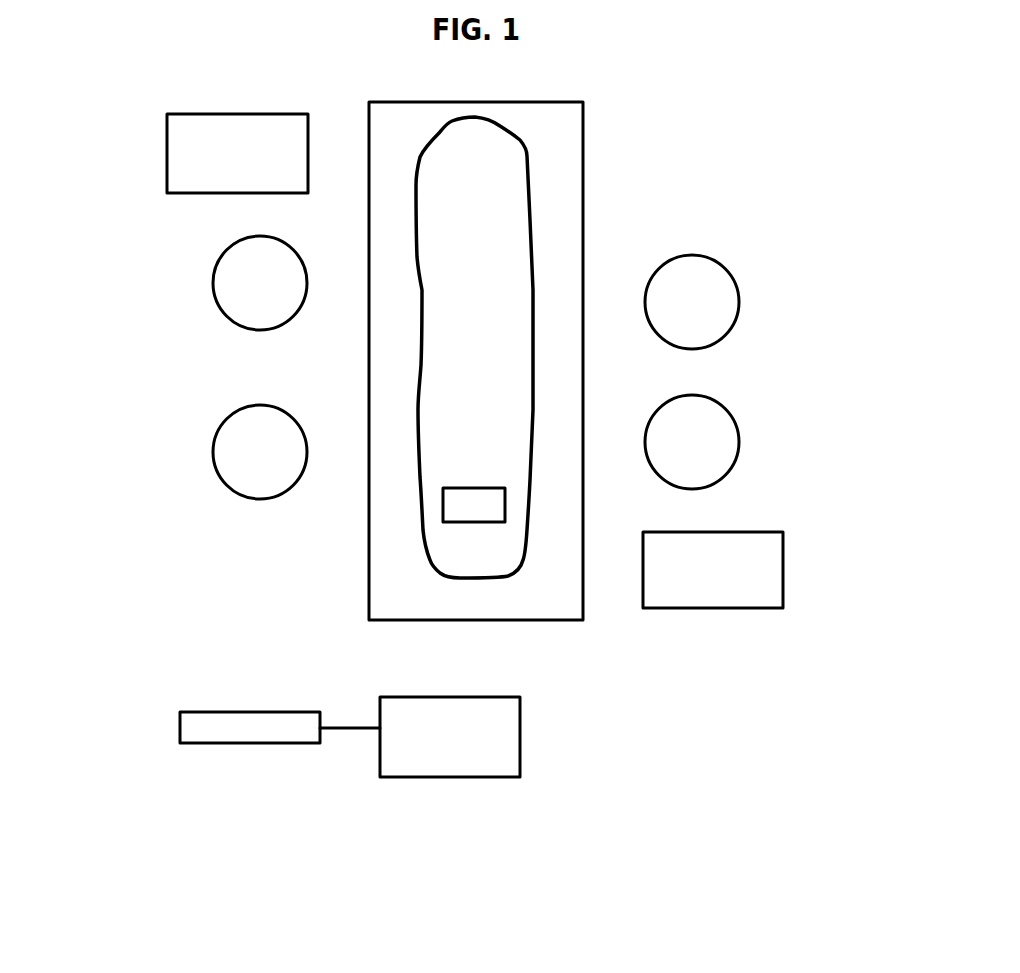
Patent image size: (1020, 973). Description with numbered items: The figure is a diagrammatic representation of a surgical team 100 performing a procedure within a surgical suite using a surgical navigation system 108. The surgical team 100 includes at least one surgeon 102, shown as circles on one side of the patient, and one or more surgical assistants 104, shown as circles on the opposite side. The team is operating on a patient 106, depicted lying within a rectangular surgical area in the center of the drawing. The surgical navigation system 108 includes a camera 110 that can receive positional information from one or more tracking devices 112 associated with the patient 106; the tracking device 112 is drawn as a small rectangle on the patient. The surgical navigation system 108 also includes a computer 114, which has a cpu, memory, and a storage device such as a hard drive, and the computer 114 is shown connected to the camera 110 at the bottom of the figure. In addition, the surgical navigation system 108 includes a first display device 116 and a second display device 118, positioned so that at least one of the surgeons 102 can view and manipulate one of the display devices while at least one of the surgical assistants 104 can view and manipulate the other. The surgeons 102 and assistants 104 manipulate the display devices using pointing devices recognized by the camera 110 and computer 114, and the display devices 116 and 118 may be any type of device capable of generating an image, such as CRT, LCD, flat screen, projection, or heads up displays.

The surgical team 100 is at (200, 512).
The surgeon 102 is at (215, 300).
The surgical assistant 104 is at (738, 310).
The patient 106 is at (537, 233).
The surgical navigation system 108 is at (322, 790).
The camera 110 is at (178, 716).
The tracking device 112 is at (443, 507).
The computer 114 is at (410, 777).
The first display device 116 is at (165, 151).
The second display device 118 is at (785, 572).